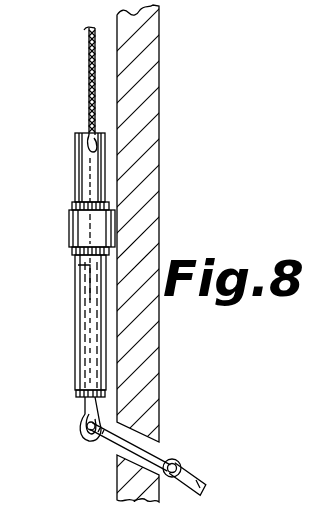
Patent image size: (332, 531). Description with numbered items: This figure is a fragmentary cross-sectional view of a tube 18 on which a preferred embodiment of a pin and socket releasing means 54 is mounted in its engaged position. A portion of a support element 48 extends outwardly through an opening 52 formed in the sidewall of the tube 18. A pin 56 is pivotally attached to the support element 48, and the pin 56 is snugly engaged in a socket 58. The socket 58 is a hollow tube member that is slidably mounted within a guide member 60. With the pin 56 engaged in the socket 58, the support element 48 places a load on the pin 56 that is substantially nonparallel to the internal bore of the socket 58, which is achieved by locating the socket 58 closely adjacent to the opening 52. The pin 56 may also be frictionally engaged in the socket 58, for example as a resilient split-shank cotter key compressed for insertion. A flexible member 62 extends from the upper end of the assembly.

The tube 18 is at (150, 114).
The support element 48 is at (206, 482).
The opening 52 is at (155, 452).
The releasing means 54 is at (60, 234).
The pin 56 is at (82, 421).
The socket 58 is at (86, 268).
The guide member 60 is at (84, 227).
The cable 62 is at (88, 72).